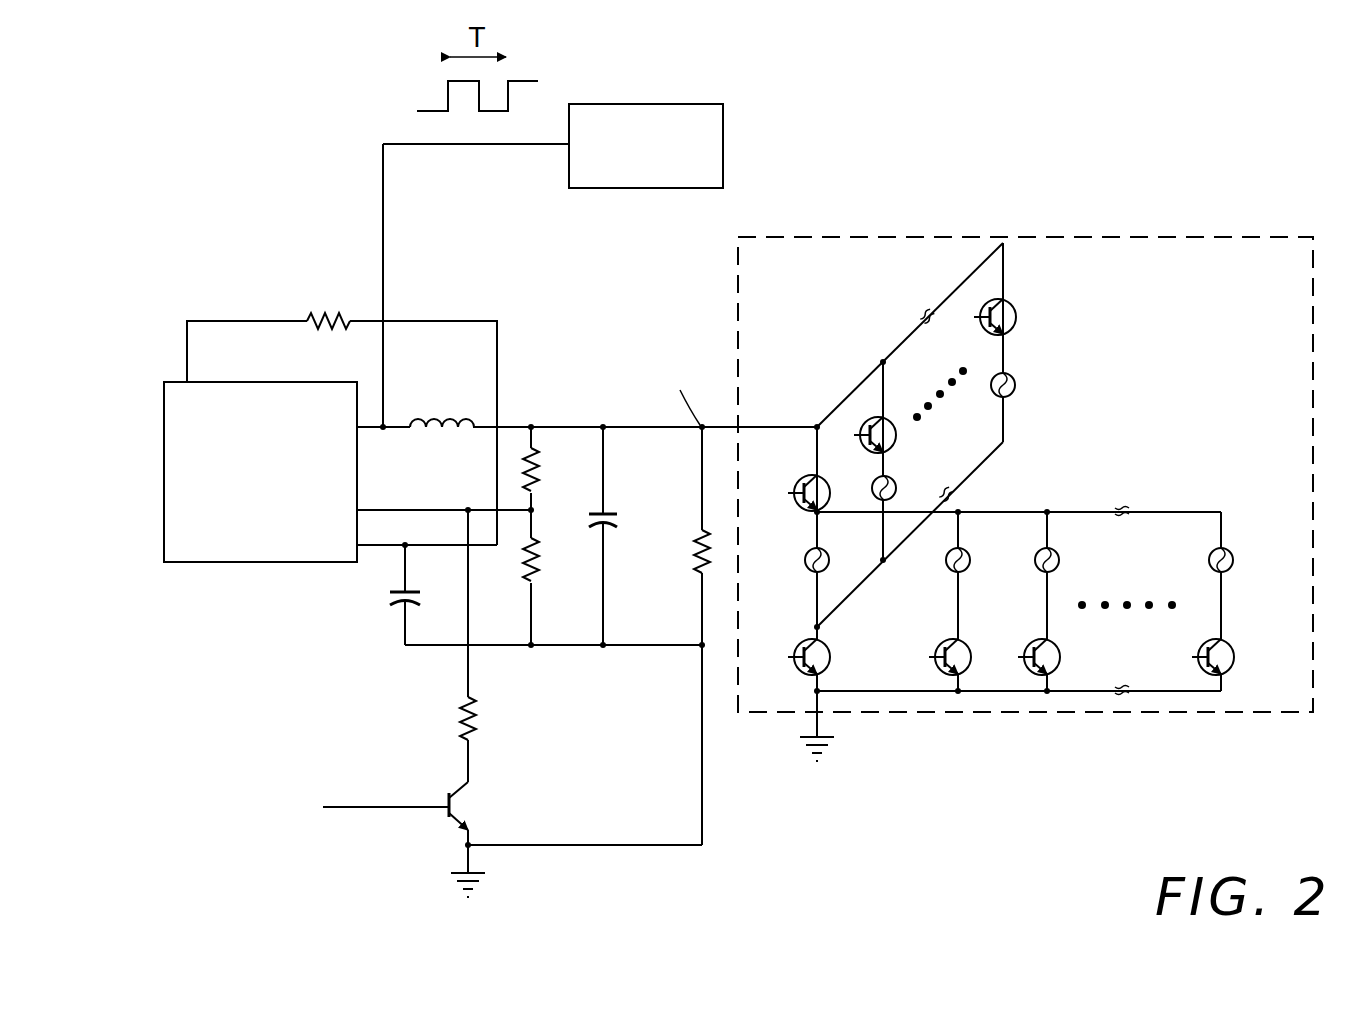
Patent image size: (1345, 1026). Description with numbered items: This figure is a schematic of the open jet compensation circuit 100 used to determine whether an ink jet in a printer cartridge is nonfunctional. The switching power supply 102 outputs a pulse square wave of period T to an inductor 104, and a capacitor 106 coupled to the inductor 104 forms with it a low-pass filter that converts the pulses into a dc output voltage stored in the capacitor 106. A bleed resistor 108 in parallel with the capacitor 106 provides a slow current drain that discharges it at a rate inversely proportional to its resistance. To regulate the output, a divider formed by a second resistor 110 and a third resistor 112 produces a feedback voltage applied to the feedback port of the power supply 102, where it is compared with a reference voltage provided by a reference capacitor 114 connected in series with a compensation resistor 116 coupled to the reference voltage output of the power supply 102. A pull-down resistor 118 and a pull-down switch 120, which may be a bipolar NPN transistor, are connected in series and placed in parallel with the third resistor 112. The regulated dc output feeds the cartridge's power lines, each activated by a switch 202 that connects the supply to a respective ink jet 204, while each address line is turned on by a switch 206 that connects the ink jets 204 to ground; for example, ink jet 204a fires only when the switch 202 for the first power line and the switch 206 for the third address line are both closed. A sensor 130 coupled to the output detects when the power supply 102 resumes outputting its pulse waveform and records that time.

The open jet compensation circuit 100 is at (168, 182).
The switching power supply 102 is at (164, 488).
The inductor L1 104 is at (433, 430).
The capacitor C1 106 is at (610, 495).
The bleed resistor R1 108 is at (682, 580).
The second resistor R2 110 is at (540, 455).
The third resistor R3 112 is at (538, 578).
The reference capacitor C2 114 is at (392, 615).
The compensation resistor R5 116 is at (313, 310).
The pull-down resistor R4 118 is at (478, 700).
The pull-down switch 120 is at (447, 815).
The sensor 130 is at (692, 104).
The switch 202 is at (1226, 236).
The ink jet 204 is at (1015, 385).
The ink jet 204a is at (1058, 562).
The switch 206 is at (830, 658).